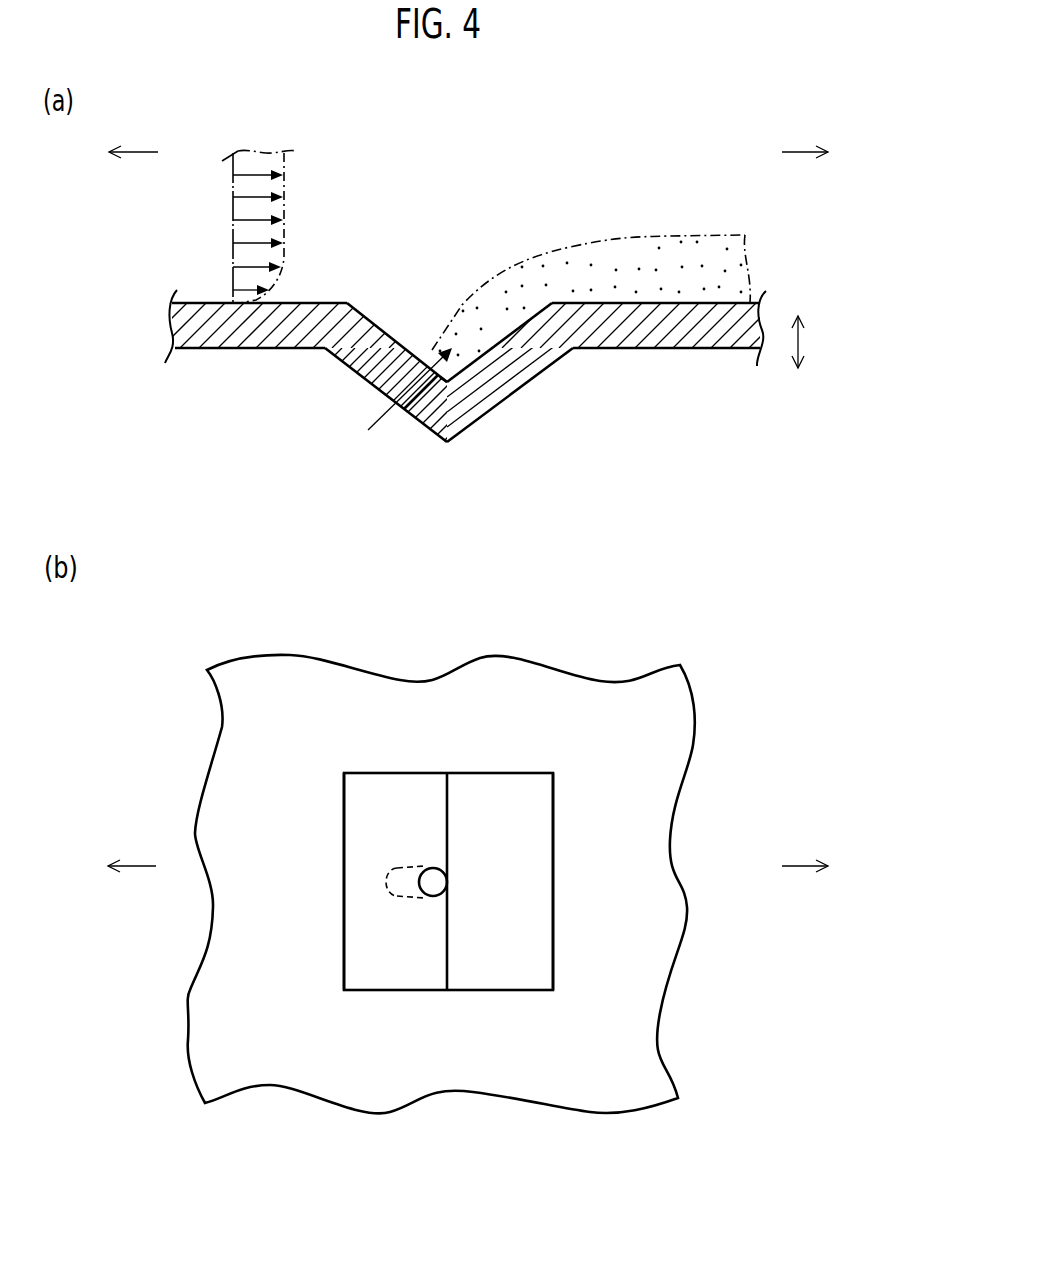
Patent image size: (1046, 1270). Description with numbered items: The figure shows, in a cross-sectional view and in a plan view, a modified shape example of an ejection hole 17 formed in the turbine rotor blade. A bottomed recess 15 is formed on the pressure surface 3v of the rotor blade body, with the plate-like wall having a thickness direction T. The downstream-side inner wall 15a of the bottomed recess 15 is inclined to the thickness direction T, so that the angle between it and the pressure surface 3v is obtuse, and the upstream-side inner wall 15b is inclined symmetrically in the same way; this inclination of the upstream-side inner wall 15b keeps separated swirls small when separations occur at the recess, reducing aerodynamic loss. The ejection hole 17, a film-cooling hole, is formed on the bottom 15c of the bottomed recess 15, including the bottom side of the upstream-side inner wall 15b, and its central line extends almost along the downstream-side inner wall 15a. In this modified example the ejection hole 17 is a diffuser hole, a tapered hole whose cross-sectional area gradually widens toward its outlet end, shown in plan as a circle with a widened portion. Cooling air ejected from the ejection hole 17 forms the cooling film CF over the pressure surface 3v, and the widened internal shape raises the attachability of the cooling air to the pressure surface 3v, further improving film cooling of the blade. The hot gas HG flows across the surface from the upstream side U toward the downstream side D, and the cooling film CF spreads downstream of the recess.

The pressure surface 3v is at (193, 303).
The bottomed recess 15 is at (441, 596).
The downstream-side inner wall 15a is at (500, 340).
The upstream-side inner wall 15b is at (382, 326).
The bottom 15c is at (418, 358).
The ejection hole 17 is at (426, 393).
The hot gas flow HG is at (286, 206).
The cooling film CF is at (712, 237).
The thickness direction T is at (811, 342).
The upstream direction U is at (121, 509).
The downstream direction D is at (817, 509).